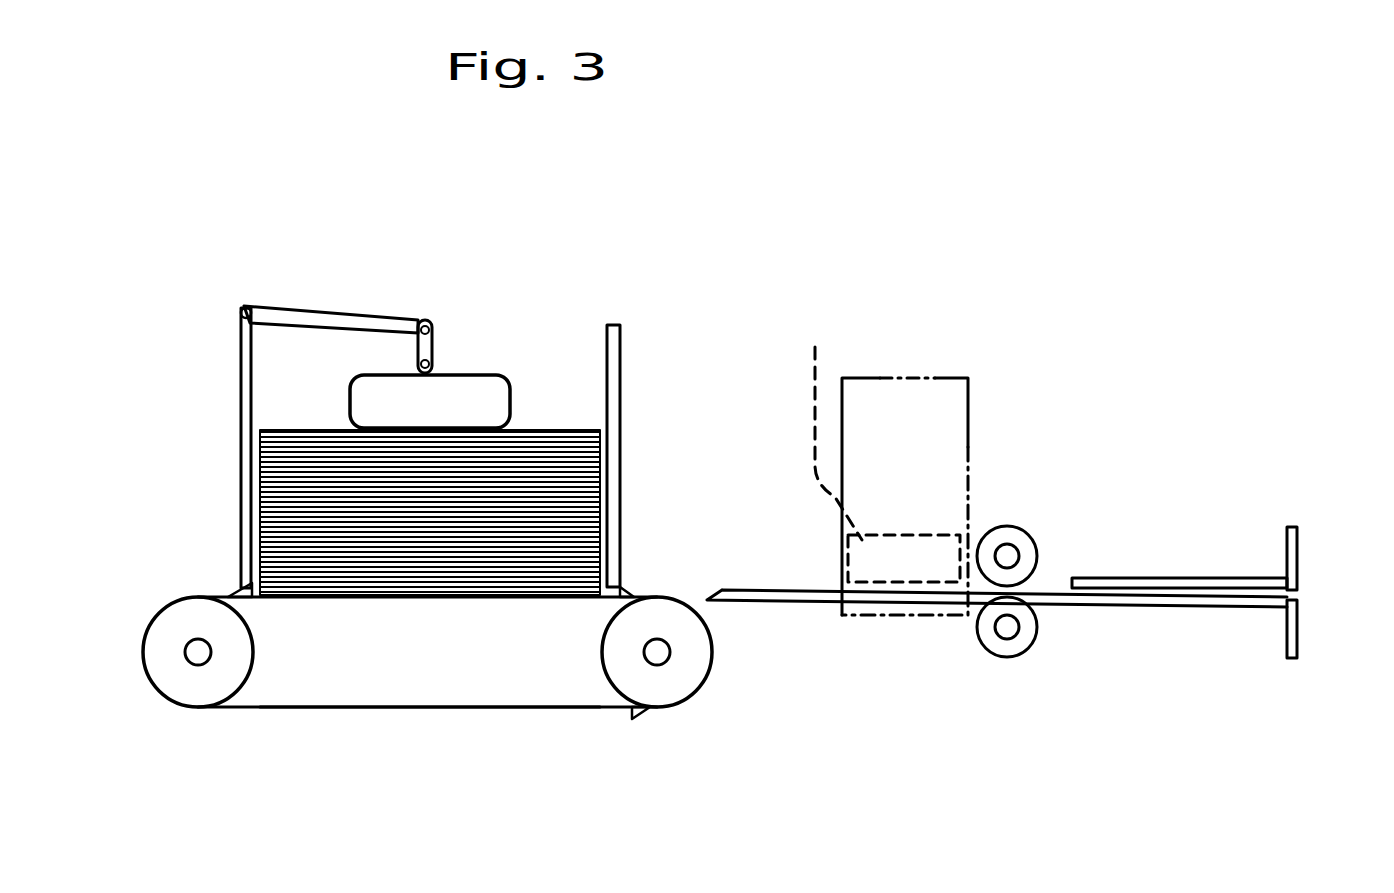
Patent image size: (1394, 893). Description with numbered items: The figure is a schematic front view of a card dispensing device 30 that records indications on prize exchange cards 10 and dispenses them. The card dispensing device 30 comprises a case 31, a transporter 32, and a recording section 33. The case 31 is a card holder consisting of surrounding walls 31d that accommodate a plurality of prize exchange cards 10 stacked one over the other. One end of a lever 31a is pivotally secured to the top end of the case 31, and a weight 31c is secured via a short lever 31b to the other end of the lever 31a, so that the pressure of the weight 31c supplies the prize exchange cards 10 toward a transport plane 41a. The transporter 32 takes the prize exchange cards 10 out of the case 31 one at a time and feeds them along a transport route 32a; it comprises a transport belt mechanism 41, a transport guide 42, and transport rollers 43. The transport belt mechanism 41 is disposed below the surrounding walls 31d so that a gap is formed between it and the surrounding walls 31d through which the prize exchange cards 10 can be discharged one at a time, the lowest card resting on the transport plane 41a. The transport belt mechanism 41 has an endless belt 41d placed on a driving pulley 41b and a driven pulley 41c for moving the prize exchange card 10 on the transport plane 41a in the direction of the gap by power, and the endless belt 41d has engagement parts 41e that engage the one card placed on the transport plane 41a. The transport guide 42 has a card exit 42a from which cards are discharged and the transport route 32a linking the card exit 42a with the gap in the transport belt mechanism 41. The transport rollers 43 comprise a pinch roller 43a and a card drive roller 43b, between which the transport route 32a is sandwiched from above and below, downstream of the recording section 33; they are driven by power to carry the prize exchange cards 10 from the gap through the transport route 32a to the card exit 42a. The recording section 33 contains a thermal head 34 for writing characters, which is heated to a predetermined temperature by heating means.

The card dispensing device 30 is at (311, 210).
The case 31 is at (243, 358).
The lever 31a is at (333, 313).
The short lever 31b is at (432, 335).
The weight 31c is at (500, 375).
The surrounding walls 31d is at (241, 407).
The prize exchange card 10 is at (315, 542).
The transporter 32 is at (175, 603).
The transport route 32a is at (1130, 600).
The recording section 33 is at (990, 346).
The thermal head 34 is at (829, 423).
The transport belt mechanism 41 is at (548, 707).
The transport plane 41a is at (623, 597).
The driving pulley 41b is at (195, 678).
The driven pulley 41c is at (668, 675).
The endless belt 41d is at (440, 707).
The engagement part 41e is at (238, 594).
The transport guide 42 is at (1225, 607).
The card exit 42a is at (1300, 600).
The transport rollers 43 is at (1005, 525).
The pinch roller 43a is at (1020, 543).
The card drive roller 43b is at (1005, 646).